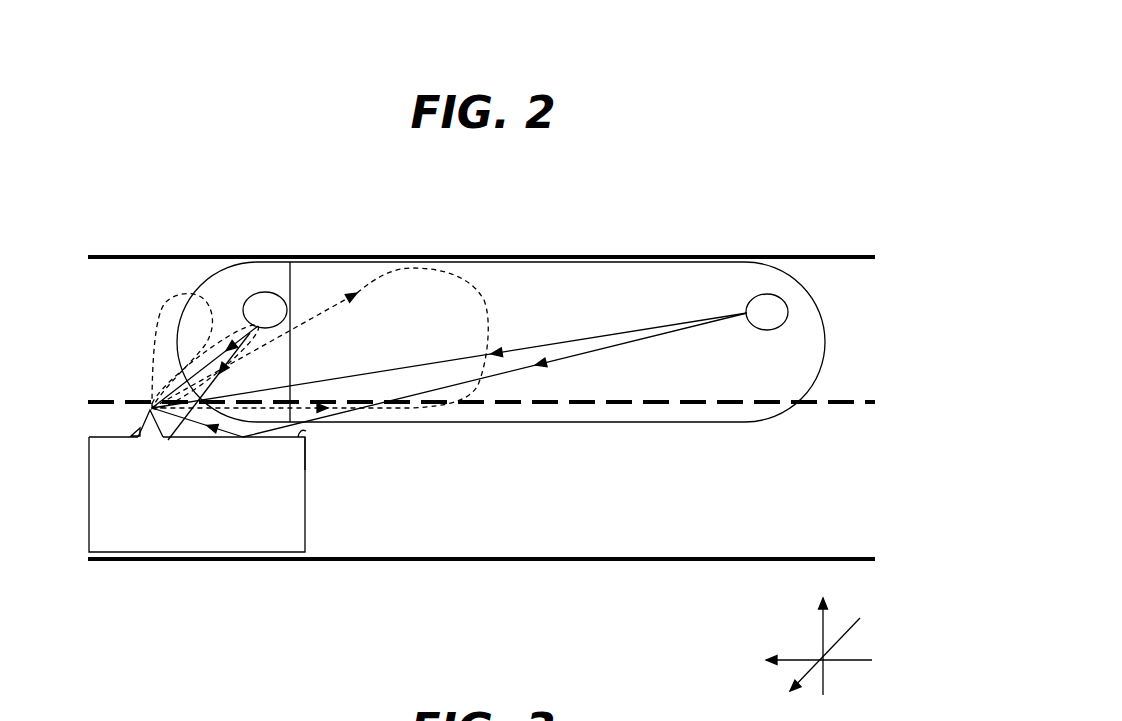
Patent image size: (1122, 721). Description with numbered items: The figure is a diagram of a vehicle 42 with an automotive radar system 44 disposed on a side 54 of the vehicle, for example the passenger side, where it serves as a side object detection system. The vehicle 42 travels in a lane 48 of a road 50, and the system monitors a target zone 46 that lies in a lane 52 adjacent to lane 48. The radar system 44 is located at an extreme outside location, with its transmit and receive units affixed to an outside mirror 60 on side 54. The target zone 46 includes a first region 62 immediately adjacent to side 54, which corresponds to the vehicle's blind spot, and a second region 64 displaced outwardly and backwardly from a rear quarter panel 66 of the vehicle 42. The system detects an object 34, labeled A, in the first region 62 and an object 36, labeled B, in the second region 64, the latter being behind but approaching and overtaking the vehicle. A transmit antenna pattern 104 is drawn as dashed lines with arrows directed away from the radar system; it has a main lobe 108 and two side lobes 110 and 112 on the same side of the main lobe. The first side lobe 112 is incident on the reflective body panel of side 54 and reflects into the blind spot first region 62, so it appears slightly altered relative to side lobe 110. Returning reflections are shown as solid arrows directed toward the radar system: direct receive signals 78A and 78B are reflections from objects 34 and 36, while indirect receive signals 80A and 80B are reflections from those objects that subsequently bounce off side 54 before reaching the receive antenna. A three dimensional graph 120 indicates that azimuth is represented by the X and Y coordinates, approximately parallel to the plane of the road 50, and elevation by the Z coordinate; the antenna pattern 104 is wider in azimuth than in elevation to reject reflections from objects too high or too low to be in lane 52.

The object 34 is at (264, 292).
The object 36 is at (767, 294).
The vehicle 42 is at (127, 545).
The automotive radar system 44 is at (147, 404).
The target zone 46 is at (520, 262).
The lane 48 is at (848, 532).
The road 50 is at (563, 548).
The lane 52 is at (481, 383).
The side 54 is at (138, 436).
The outside mirror 60 is at (148, 412).
The first region 62 is at (273, 278).
The second region 64 is at (700, 270).
The rear quarter panel 66 is at (306, 431).
The direct receive signal 78A is at (193, 372).
The direct receive signal 78B is at (583, 338).
The indirect receive signal 80A is at (151, 420).
The indirect receive signal 80B is at (207, 429).
The transmit antenna pattern 104 is at (411, 284).
The main lobe 108 is at (487, 312).
The side lobe 110 is at (163, 310).
The first side lobe 112 is at (233, 340).
The three dimensional graph 120 is at (779, 613).